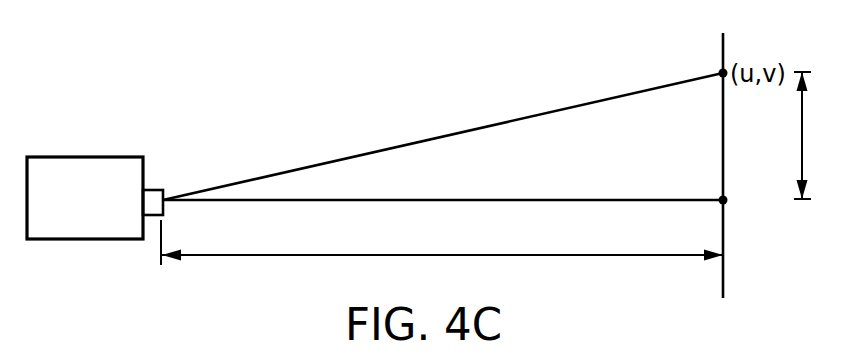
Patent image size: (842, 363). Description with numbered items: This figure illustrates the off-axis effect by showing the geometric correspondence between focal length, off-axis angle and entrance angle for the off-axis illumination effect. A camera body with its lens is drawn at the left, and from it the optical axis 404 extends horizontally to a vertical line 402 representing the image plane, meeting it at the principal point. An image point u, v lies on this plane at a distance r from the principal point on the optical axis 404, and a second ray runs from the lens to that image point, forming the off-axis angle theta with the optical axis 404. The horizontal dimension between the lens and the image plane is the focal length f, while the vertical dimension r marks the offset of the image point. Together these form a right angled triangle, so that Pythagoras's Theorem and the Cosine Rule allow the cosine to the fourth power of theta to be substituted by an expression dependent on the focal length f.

The image plane 402 is at (723, 41).
The optical axis 404 is at (488, 199).
The off-axis angle theta is at (443, 136).
The focal length f is at (442, 242).
The distance from principal point r is at (806, 135).